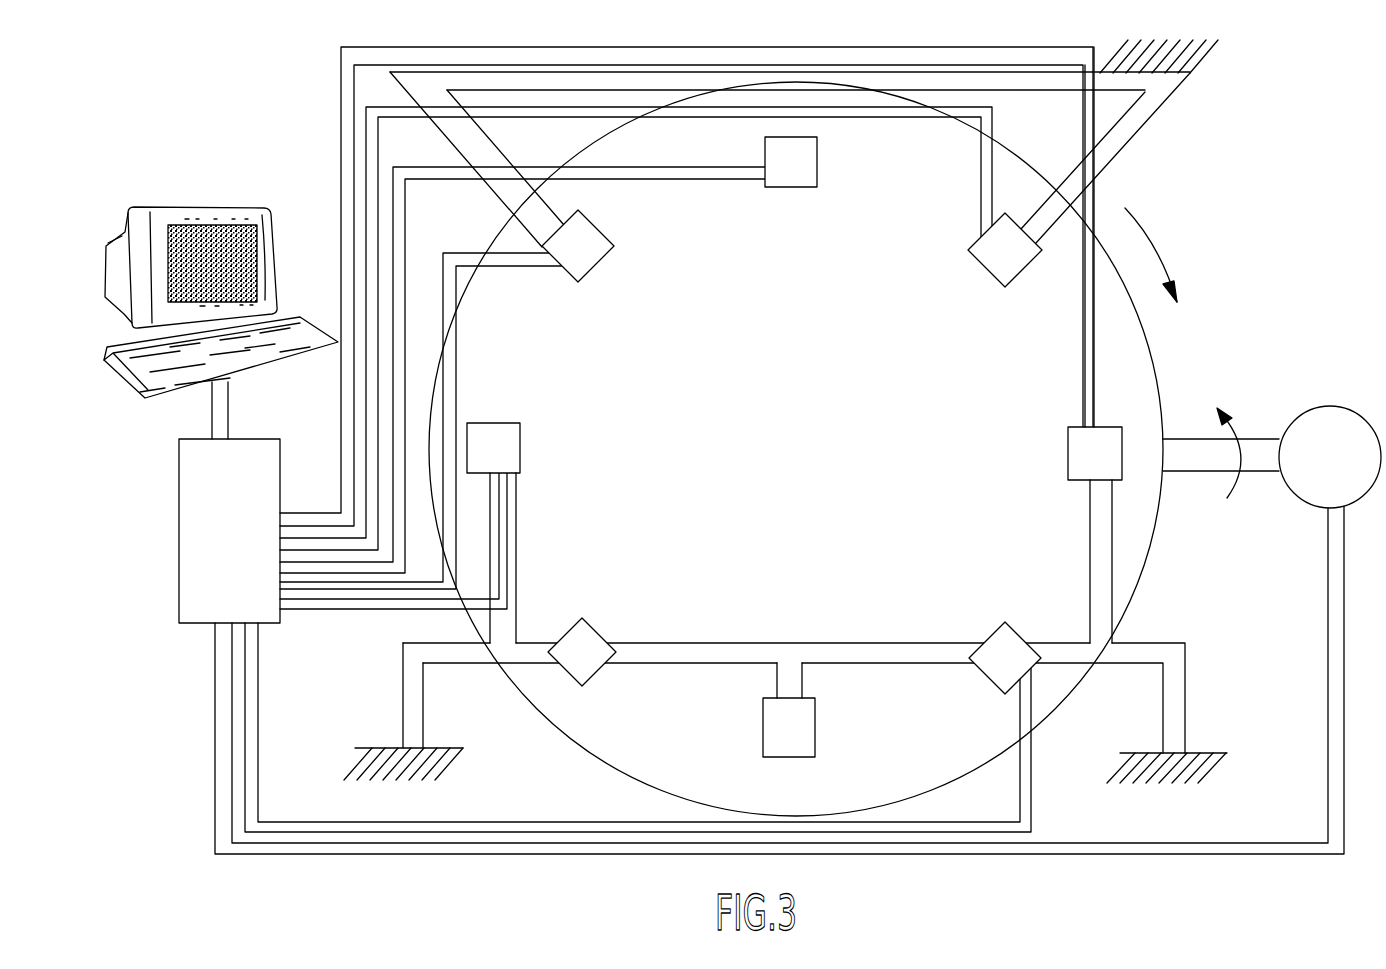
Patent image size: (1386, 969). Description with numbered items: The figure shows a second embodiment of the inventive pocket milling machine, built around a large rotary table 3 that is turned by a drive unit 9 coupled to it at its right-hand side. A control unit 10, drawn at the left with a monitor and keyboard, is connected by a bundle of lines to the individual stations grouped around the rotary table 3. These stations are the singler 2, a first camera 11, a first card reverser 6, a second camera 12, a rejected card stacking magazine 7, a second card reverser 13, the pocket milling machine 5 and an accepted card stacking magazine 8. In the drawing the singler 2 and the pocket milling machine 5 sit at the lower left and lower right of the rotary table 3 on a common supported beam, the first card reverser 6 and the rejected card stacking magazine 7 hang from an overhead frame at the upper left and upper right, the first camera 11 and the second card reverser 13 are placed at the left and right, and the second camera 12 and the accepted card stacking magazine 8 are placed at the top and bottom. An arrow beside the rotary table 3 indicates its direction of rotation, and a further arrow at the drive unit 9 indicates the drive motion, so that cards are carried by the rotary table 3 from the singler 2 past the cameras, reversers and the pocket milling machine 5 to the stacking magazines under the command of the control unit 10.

The singler 2 is at (592, 645).
The rotary table 3 is at (877, 400).
The pocket milling machine 5 is at (1000, 648).
The first card reverser 6 is at (596, 252).
The rejected card stacking magazine 7 is at (985, 255).
The accepted card stacking magazine 8 is at (795, 723).
The drive unit 9 is at (1347, 480).
The control unit 10 is at (200, 530).
The first camera 11 is at (505, 447).
The second camera 12 is at (788, 177).
The second card reverser 13 is at (1080, 445).